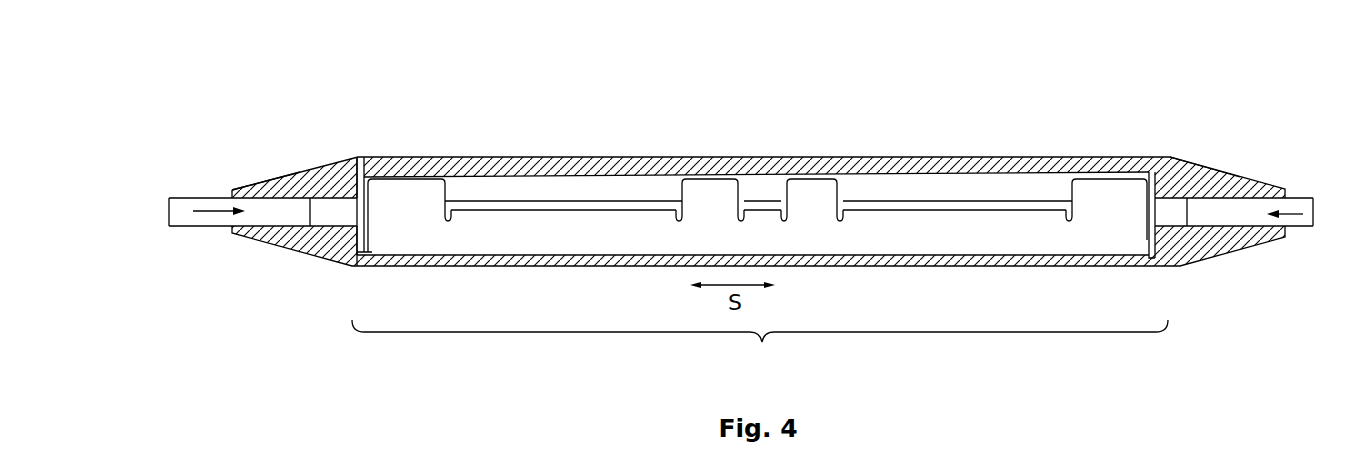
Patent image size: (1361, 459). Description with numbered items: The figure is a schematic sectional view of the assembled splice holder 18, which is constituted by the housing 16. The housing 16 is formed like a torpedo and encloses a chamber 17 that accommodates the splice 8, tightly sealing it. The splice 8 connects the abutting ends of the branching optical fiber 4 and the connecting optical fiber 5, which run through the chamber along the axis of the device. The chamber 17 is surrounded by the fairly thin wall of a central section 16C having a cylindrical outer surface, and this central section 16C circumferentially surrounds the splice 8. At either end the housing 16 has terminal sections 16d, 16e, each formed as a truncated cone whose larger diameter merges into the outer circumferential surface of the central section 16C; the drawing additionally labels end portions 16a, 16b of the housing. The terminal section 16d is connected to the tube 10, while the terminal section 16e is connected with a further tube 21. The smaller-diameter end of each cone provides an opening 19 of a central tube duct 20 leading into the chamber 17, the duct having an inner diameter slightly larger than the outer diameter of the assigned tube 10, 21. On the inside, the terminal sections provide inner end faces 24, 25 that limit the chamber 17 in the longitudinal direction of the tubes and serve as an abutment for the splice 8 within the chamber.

The splice holder 18 is at (176, 50).
The housing 16 is at (782, 154).
The housing end portion 16a is at (1158, 151).
The housing end portion 16b is at (325, 172).
The central section 16C is at (760, 347).
The terminal section 16d is at (255, 170).
The terminal section 16e is at (1214, 162).
The tube 10 is at (176, 201).
The further tube 21 is at (1302, 198).
The central tube duct 20 is at (193, 211).
The opening 19 is at (229, 228).
The inner end face 25 is at (383, 156).
The inner end face 24 is at (1152, 248).
The chamber 17 is at (519, 188).
The splice 8 is at (699, 197).
The branching optical fiber 4 is at (490, 205).
The connecting optical fiber 5 is at (942, 200).